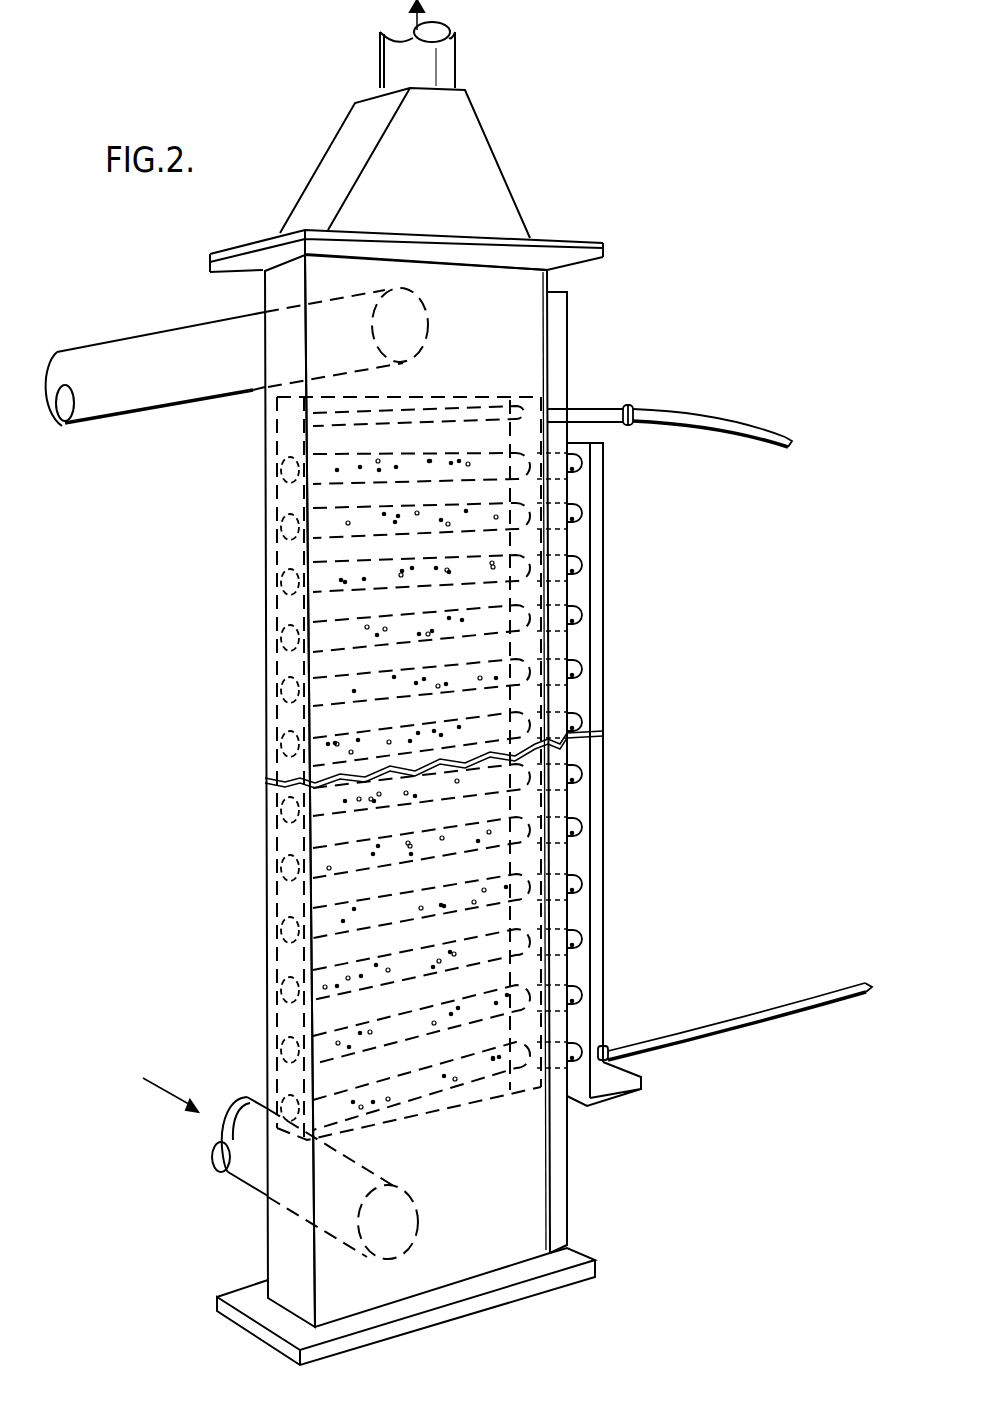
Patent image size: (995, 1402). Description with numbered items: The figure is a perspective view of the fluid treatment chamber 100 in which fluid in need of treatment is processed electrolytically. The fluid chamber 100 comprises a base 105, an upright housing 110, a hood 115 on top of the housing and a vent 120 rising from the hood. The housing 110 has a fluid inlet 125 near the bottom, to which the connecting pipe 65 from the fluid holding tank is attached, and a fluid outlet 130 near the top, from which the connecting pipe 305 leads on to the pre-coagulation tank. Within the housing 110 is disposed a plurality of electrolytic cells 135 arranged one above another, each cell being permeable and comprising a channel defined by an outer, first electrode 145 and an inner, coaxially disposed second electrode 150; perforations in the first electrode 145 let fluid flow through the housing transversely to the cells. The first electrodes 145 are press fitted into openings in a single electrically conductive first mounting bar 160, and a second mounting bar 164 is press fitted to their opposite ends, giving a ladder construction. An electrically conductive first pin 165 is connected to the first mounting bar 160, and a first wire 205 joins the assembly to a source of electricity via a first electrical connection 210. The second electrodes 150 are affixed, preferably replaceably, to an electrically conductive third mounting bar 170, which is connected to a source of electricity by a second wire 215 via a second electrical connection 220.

The fluid treatment chamber 100 is at (322, 130).
The base 105 is at (215, 1300).
The housing 110 is at (266, 812).
The hood 115 is at (512, 200).
The vent 120 is at (457, 34).
The fluid inlet 125 is at (418, 1228).
The fluid outlet 130 is at (428, 318).
The electrolytic cell 135 is at (444, 1098).
The first electrode 145 is at (512, 608).
The second electrode 150 is at (580, 518).
The first mounting bar 160 is at (285, 962).
The second mounting bar 164 is at (530, 397).
The first pin 165 is at (600, 406).
The third mounting bar 170 is at (603, 685).
The first wire 205 is at (738, 420).
The first electrical connection 210 is at (627, 410).
The second wire 215 is at (750, 1020).
The second electrical connection 220 is at (607, 1052).
The connecting pipe 305 is at (172, 405).
The connecting pipe 65 is at (228, 1172).